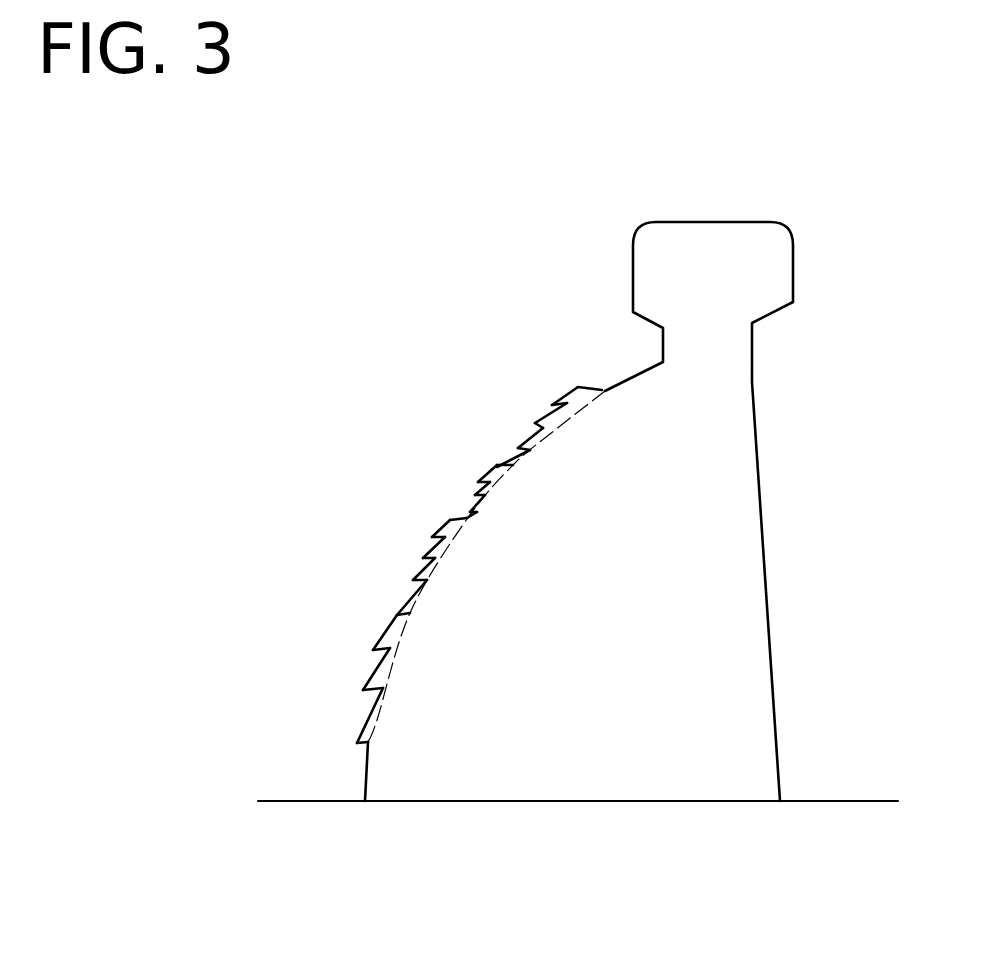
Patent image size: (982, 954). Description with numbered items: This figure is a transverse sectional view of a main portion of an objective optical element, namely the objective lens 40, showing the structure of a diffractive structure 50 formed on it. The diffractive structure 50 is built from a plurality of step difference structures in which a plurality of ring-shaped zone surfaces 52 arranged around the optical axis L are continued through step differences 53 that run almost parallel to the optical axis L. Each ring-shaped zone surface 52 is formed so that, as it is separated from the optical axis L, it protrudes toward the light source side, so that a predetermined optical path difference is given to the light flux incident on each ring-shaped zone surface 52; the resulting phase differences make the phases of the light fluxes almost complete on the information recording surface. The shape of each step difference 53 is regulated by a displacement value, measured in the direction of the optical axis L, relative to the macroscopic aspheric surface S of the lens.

The objective lens 40 is at (713, 255).
The diffractive structure 50 is at (430, 527).
The ring-shaped zone surface 52 is at (417, 577).
The step difference 53 is at (420, 580).
The macroscopic aspheric surface S is at (568, 419).
The optical axis L is at (598, 802).